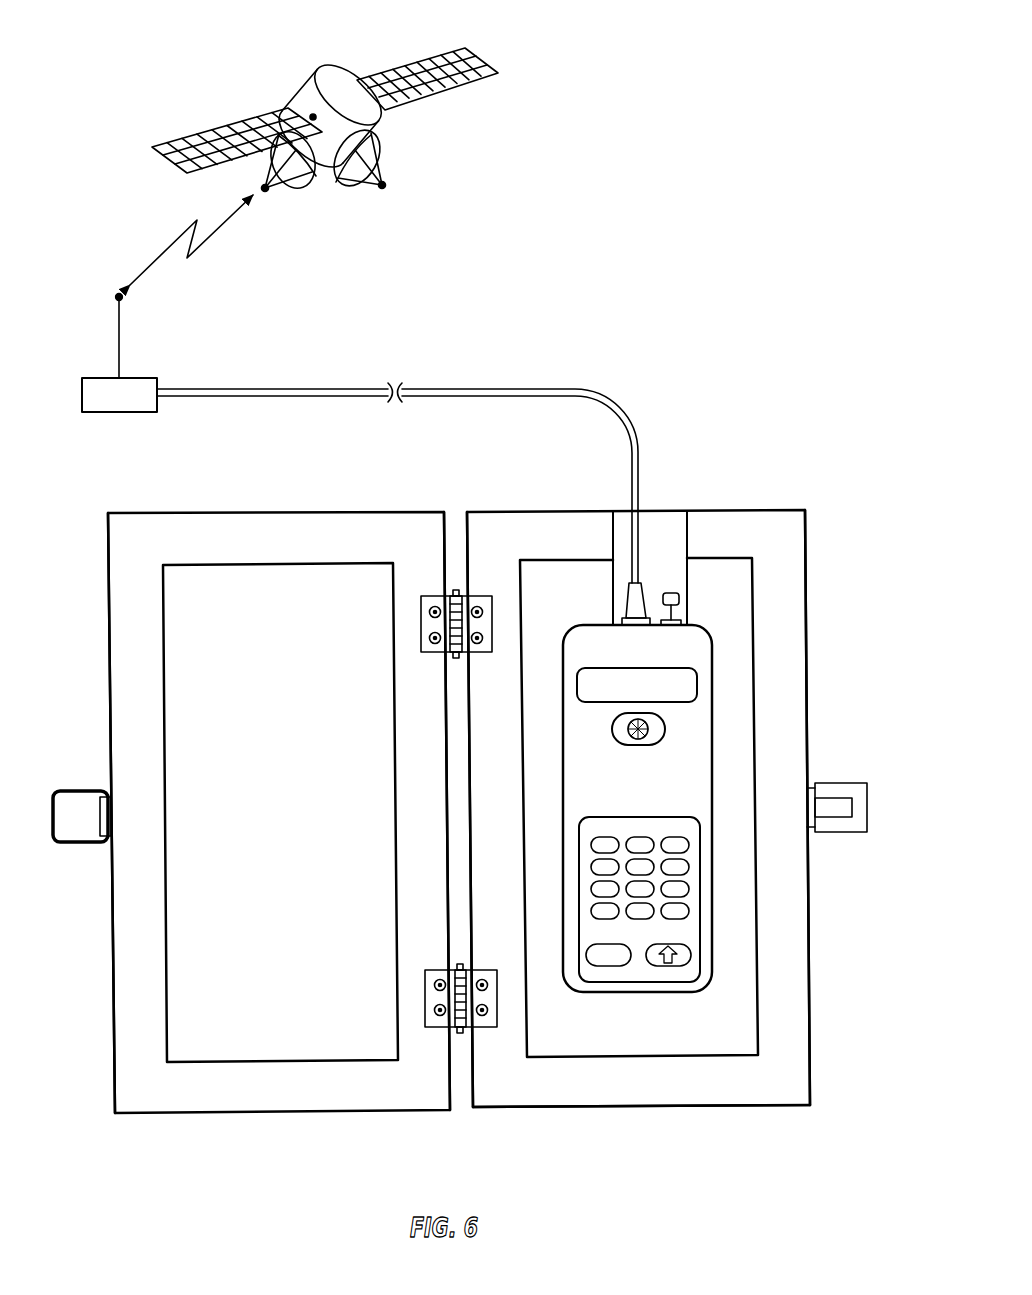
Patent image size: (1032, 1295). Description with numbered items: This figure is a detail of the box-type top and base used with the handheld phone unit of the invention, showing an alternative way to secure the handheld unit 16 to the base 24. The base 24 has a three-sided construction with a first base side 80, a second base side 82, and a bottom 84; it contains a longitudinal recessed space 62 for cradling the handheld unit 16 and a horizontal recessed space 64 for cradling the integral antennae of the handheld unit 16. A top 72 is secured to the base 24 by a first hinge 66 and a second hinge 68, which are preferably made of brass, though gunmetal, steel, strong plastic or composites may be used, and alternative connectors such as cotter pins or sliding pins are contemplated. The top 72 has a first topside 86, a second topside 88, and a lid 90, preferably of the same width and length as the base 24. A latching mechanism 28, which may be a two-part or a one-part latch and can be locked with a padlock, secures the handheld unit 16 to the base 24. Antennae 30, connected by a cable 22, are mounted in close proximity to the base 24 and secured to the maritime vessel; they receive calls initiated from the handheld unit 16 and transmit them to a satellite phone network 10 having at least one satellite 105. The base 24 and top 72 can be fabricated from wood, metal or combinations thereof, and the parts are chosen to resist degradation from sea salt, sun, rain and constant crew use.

The satellite phone network 10 is at (756, 80).
The satellite 105 is at (342, 85).
The antennae 30 is at (118, 296).
The cable 22 is at (508, 388).
The top 72 is at (220, 512).
The second topside 88 is at (422, 575).
The bottom 84 is at (555, 575).
The horizontal recessed space 64 is at (663, 525).
The lid 90 is at (215, 703).
The first hinge 66 is at (456, 655).
The second hinge 68 is at (460, 968).
The handheld unit 16 is at (713, 765).
The latching mechanism 28 is at (848, 783).
The first topside 86 is at (128, 1037).
The first base side 80 is at (793, 1014).
The longitudinal recessed space 62 is at (737, 1032).
The second base side 82 is at (495, 1058).
The base 24 is at (757, 1108).